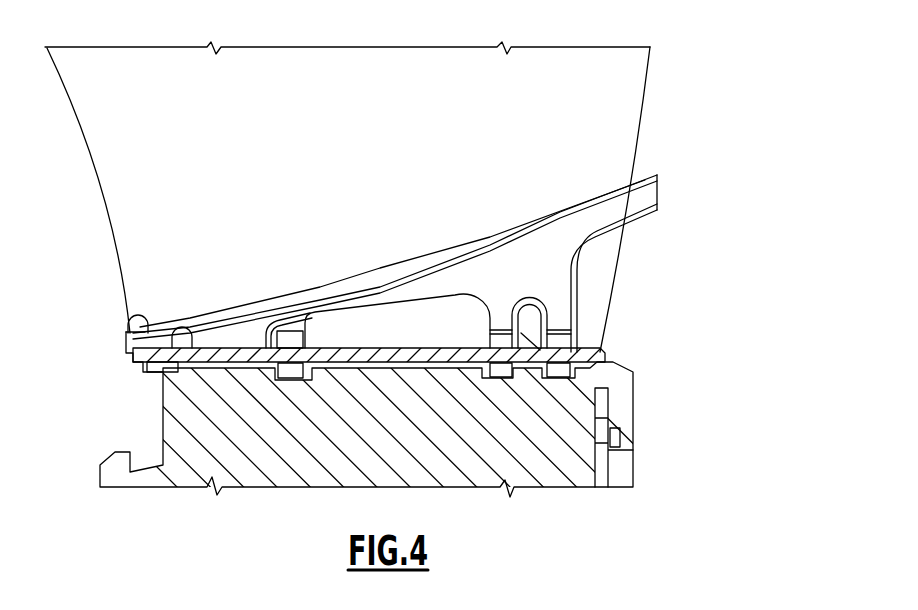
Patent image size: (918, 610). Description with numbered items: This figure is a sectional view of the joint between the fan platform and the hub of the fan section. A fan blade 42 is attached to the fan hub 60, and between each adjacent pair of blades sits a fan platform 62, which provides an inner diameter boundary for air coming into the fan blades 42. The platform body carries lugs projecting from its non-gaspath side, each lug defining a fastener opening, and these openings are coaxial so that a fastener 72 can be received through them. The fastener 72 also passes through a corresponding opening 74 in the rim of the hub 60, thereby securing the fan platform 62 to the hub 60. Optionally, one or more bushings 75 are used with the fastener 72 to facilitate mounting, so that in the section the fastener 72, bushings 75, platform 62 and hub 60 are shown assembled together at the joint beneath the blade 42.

The fan blade 42 is at (628, 93).
The fan hub 60 is at (192, 477).
The fan platform 62 is at (646, 176).
The fastener 72 is at (602, 352).
The opening 74 is at (188, 345).
The bushing 75 is at (130, 318).